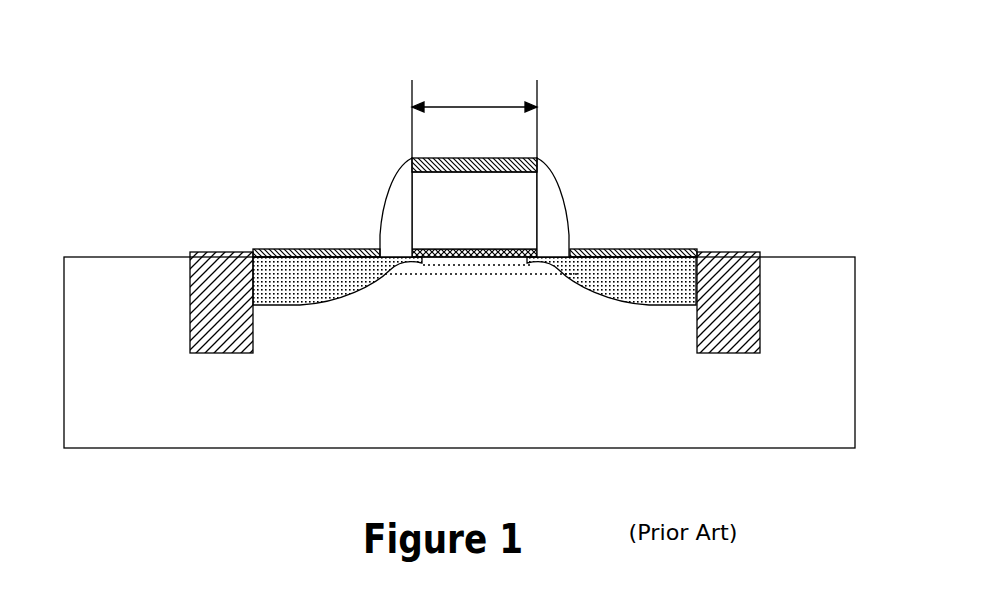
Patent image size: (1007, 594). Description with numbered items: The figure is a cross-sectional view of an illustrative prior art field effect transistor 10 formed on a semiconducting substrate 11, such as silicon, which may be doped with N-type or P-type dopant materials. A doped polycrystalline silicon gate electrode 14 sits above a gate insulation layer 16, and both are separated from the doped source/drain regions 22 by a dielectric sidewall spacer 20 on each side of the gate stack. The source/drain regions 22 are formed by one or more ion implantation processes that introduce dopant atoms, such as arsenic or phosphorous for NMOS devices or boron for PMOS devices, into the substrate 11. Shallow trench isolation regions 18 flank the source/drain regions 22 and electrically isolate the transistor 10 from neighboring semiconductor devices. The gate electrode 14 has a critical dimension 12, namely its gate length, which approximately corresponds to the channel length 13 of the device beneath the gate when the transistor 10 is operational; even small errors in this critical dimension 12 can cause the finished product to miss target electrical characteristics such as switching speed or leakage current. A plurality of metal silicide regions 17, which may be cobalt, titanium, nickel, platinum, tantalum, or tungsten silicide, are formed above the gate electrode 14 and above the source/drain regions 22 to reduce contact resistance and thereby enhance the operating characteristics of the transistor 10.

The field effect transistor 10 is at (378, 137).
The substrate 11 is at (753, 422).
The critical dimension 12 is at (478, 107).
The channel length 13 is at (475, 273).
The gate electrode 14 is at (508, 193).
The gate insulation layer 16 is at (520, 250).
The metal silicide regions 17 is at (300, 256).
The shallow trench isolation regions 18 is at (217, 278).
The dielectric sidewall spacer 20 is at (395, 208).
The source/drain regions 22 is at (270, 272).